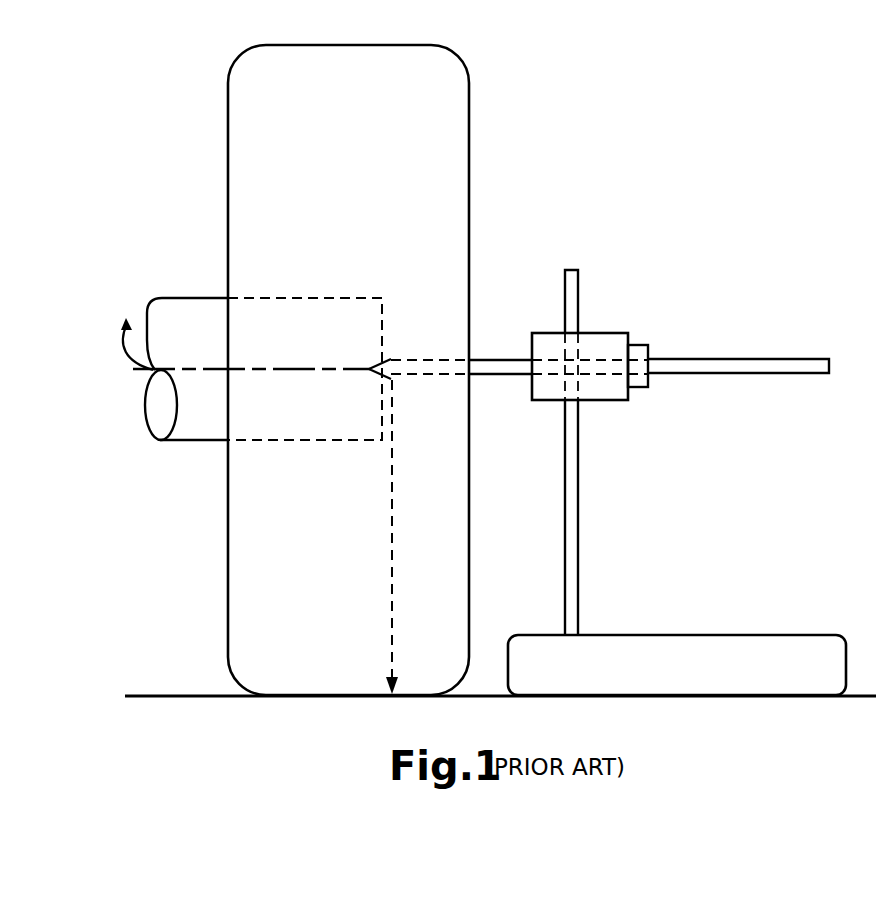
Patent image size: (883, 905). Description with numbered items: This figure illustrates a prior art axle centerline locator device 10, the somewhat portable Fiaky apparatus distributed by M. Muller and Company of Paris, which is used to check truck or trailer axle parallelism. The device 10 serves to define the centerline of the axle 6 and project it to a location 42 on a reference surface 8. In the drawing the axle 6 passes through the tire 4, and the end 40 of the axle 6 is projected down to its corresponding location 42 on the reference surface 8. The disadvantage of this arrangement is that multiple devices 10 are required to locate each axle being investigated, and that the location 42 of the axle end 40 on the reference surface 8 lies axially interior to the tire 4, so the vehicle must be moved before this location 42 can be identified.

The tire 4 is at (469, 168).
The axle 6 is at (307, 296).
The reference surface 8 is at (203, 694).
The axle centerline locator device 10 is at (622, 320).
The end of the axle 40 is at (392, 359).
The location on the reference surface 42 is at (387, 692).